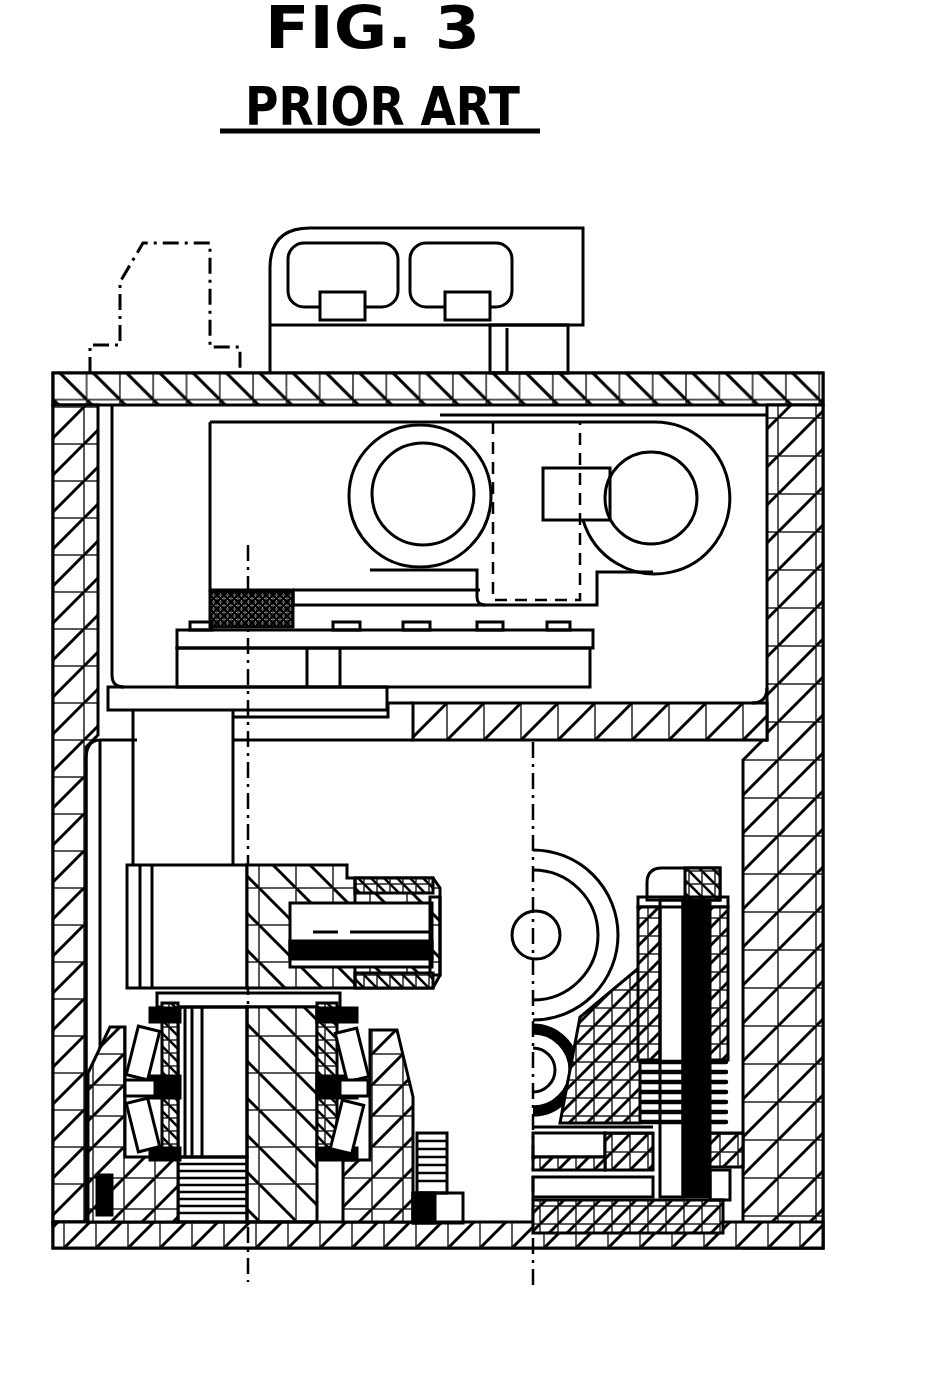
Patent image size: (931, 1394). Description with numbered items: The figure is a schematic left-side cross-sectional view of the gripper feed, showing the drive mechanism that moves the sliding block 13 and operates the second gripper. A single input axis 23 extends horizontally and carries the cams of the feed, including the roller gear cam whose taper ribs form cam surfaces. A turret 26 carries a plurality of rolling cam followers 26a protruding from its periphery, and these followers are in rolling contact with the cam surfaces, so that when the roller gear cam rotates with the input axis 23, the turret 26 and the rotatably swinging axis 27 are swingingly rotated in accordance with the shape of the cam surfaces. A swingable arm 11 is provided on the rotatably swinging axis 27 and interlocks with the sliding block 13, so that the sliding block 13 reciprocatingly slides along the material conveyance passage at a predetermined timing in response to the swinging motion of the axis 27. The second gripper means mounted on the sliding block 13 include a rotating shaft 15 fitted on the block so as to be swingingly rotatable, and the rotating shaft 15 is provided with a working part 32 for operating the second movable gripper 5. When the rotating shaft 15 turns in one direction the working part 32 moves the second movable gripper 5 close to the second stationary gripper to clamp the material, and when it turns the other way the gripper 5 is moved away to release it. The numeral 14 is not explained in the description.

The second movable gripper 5 is at (583, 252).
The swingable arm 11 is at (590, 668).
The sliding block 13 is at (210, 532).
The ring member 14 is at (387, 477).
The rotating shaft 15 is at (676, 523).
The input axis 23 is at (575, 900).
The turret 26 is at (290, 868).
The rolling cam followers 26a is at (393, 880).
The rotatably swinging axis 27 is at (358, 1032).
The working part 32 is at (594, 517).